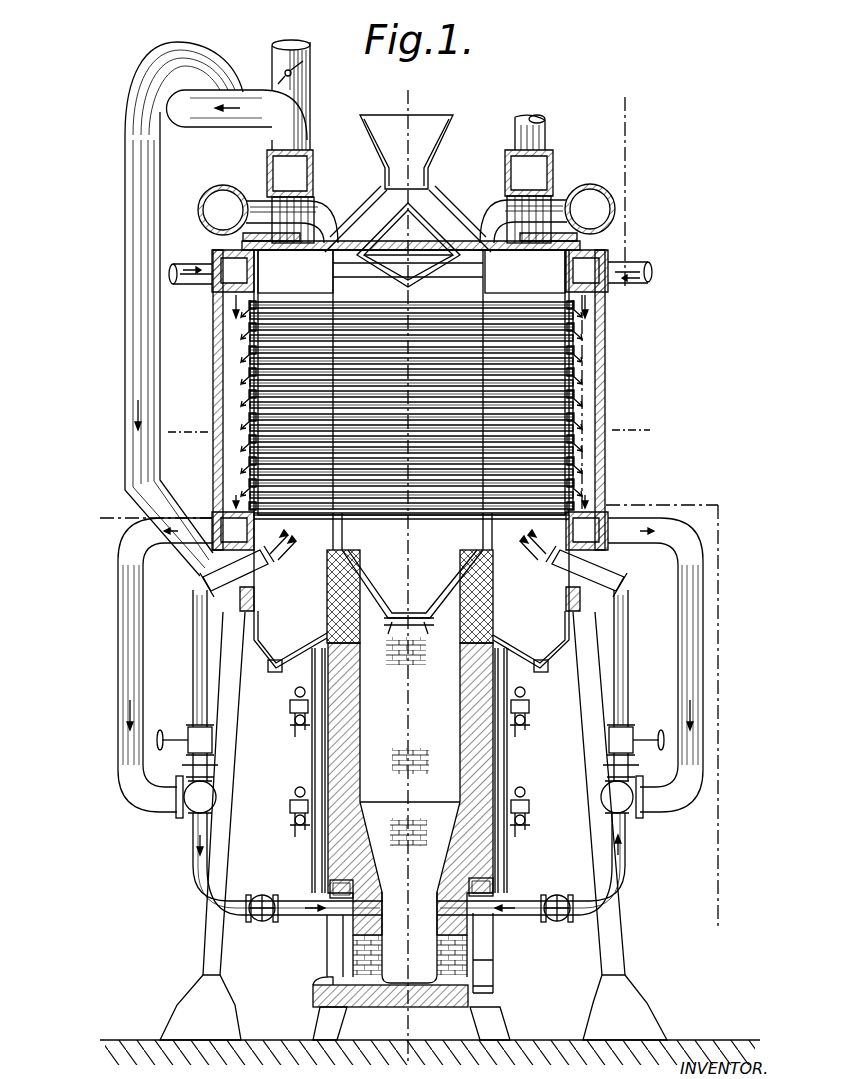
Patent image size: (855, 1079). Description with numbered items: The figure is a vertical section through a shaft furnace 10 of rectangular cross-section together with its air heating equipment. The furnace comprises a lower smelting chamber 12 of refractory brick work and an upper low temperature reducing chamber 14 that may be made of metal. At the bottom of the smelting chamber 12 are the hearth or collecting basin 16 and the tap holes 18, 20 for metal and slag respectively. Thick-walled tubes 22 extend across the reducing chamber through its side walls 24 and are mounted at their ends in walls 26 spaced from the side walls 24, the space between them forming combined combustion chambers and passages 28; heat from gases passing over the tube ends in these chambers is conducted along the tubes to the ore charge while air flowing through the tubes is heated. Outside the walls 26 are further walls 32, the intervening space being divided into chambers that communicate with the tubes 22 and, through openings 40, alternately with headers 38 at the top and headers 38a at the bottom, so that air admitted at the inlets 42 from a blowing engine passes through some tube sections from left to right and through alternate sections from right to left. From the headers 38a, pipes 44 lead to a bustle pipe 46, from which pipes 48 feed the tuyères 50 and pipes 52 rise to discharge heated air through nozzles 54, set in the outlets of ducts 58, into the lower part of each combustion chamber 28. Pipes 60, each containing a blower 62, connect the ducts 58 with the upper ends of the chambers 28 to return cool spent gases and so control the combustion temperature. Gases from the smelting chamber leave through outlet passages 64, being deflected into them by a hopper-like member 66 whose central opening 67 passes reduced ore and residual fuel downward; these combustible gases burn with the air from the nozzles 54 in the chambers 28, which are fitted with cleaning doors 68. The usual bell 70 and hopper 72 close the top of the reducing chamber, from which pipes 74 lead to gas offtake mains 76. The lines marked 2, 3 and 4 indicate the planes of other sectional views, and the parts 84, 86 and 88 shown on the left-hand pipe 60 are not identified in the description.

The section line 2- 2 is at (384, 97).
The section line 3- 3 is at (625, 97).
The section line 4- 4 is at (187, 448).
The shaft furnace 10 is at (427, 538).
The smelting chamber 12 is at (445, 777).
The low temperature reducing chamber 14 is at (478, 278).
The hearth or collecting basin 16 is at (400, 937).
The tap hole 18 is at (325, 980).
The tap hole 20 is at (500, 952).
The tubes 22 is at (580, 330).
The side walls 24 is at (322, 279).
The walls 26 is at (246, 380).
The combined combustion chambers and passages 28 is at (411, 591).
The walls 32 is at (213, 350).
The headers 38 is at (212, 254).
The headers 38a is at (218, 517).
The openings 40 is at (213, 308).
The inlets 42 is at (202, 287).
The pipes 44 is at (118, 648).
The bustle pipe 46 is at (193, 807).
The pipes 48 is at (190, 876).
The tuyères 50 is at (352, 915).
The pipes 52 is at (193, 674).
The nozzles 54 is at (312, 574).
The ducts 58 is at (413, 585).
The pipes 60 is at (123, 240).
The blower 62 is at (206, 52).
The outlet passages 64 is at (330, 590).
The hopper-like member 66 is at (386, 612).
The central opening 67 is at (415, 618).
The doors 68 is at (270, 674).
The bell 70 is at (408, 245).
The hopper 72 is at (428, 136).
The pipes 74 is at (320, 206).
The gas offtake mains 76 is at (244, 172).
The valve box 84 is at (293, 169).
The vent pipe 86 is at (309, 101).
The fitting 88 is at (300, 68).